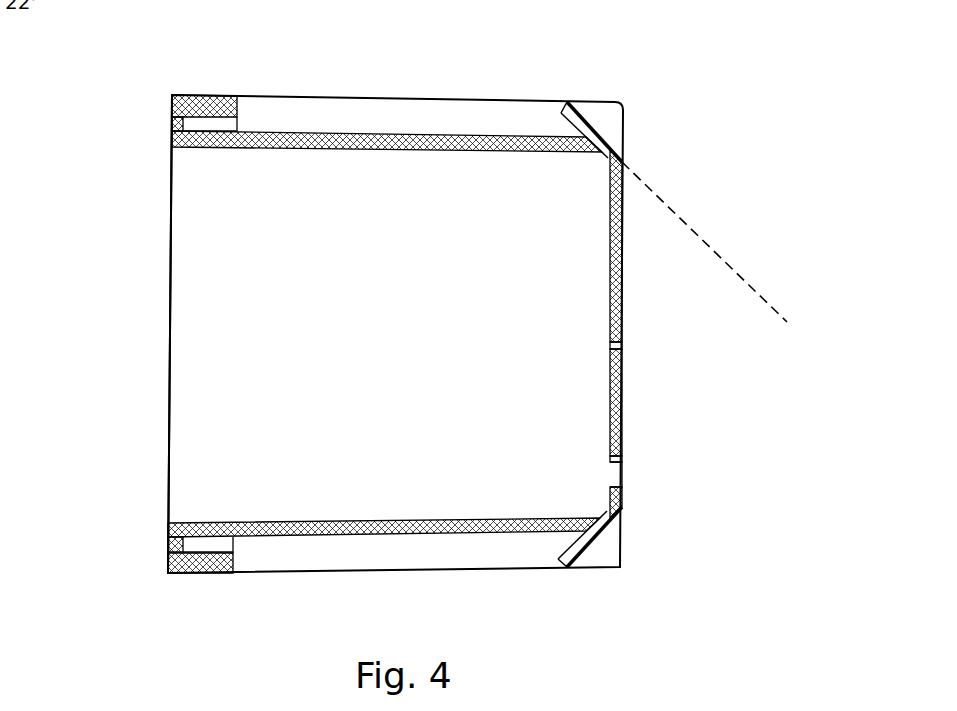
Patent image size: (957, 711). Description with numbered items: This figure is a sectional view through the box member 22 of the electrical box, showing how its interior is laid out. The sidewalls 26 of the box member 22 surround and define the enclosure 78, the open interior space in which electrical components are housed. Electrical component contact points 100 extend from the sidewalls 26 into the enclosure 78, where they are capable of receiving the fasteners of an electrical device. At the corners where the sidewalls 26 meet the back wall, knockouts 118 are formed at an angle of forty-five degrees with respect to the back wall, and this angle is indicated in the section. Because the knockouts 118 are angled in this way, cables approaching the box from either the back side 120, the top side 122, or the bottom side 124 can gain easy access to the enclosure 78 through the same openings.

The box member 22 is at (600, 84).
The sidewalls 26 is at (402, 304).
The enclosure 78 is at (233, 372).
The electrical component contact points 100 is at (172, 127).
The knockout 118 is at (598, 128).
The back side 120 is at (622, 400).
The top side 122 is at (297, 96).
The bottom side 124 is at (505, 571).